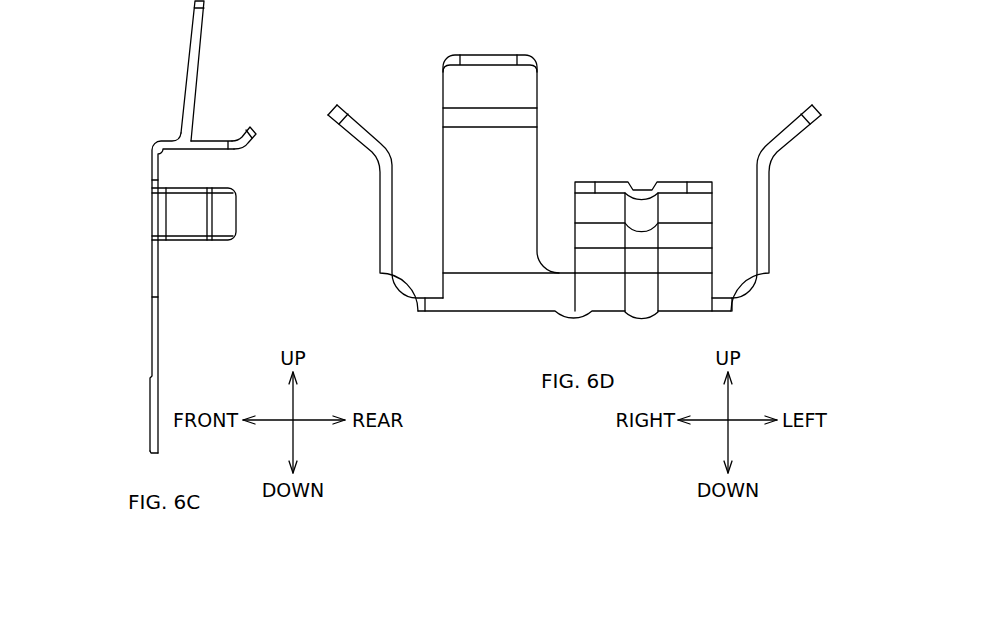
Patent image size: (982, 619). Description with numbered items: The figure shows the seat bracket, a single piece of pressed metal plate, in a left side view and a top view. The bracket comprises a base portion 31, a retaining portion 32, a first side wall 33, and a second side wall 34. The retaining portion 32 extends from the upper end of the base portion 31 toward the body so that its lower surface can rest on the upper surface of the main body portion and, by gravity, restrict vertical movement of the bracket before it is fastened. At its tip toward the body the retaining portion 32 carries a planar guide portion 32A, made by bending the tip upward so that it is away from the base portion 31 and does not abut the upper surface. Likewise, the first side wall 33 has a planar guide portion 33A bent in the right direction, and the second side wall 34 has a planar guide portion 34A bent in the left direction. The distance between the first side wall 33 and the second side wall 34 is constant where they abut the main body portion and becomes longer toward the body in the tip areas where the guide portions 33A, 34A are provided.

In FIG. 6C, the base portion 31 is at (172, 227).
In FIG. 6D, the base portion 31 is at (573, 211).
In FIG. 6C, the retaining portion 32 is at (233, 75).
In FIG. 6D, the retaining portion 32 is at (475, 176).
In FIG. 6C, the planar guide portion 32A is at (243, 128).
In FIG. 6D, the planar guide portion 32A is at (455, 90).
In FIG. 6D, the first side wall 33 is at (382, 178).
In FIG. 6D, the planar guide portion 33A is at (341, 111).
In FIG. 6C, the second side wall 34 is at (202, 247).
In FIG. 6D, the second side wall 34 is at (768, 182).
In FIG. 6C, the planar guide portion 34A is at (227, 230).
In FIG. 6D, the planar guide portion 34A is at (807, 108).